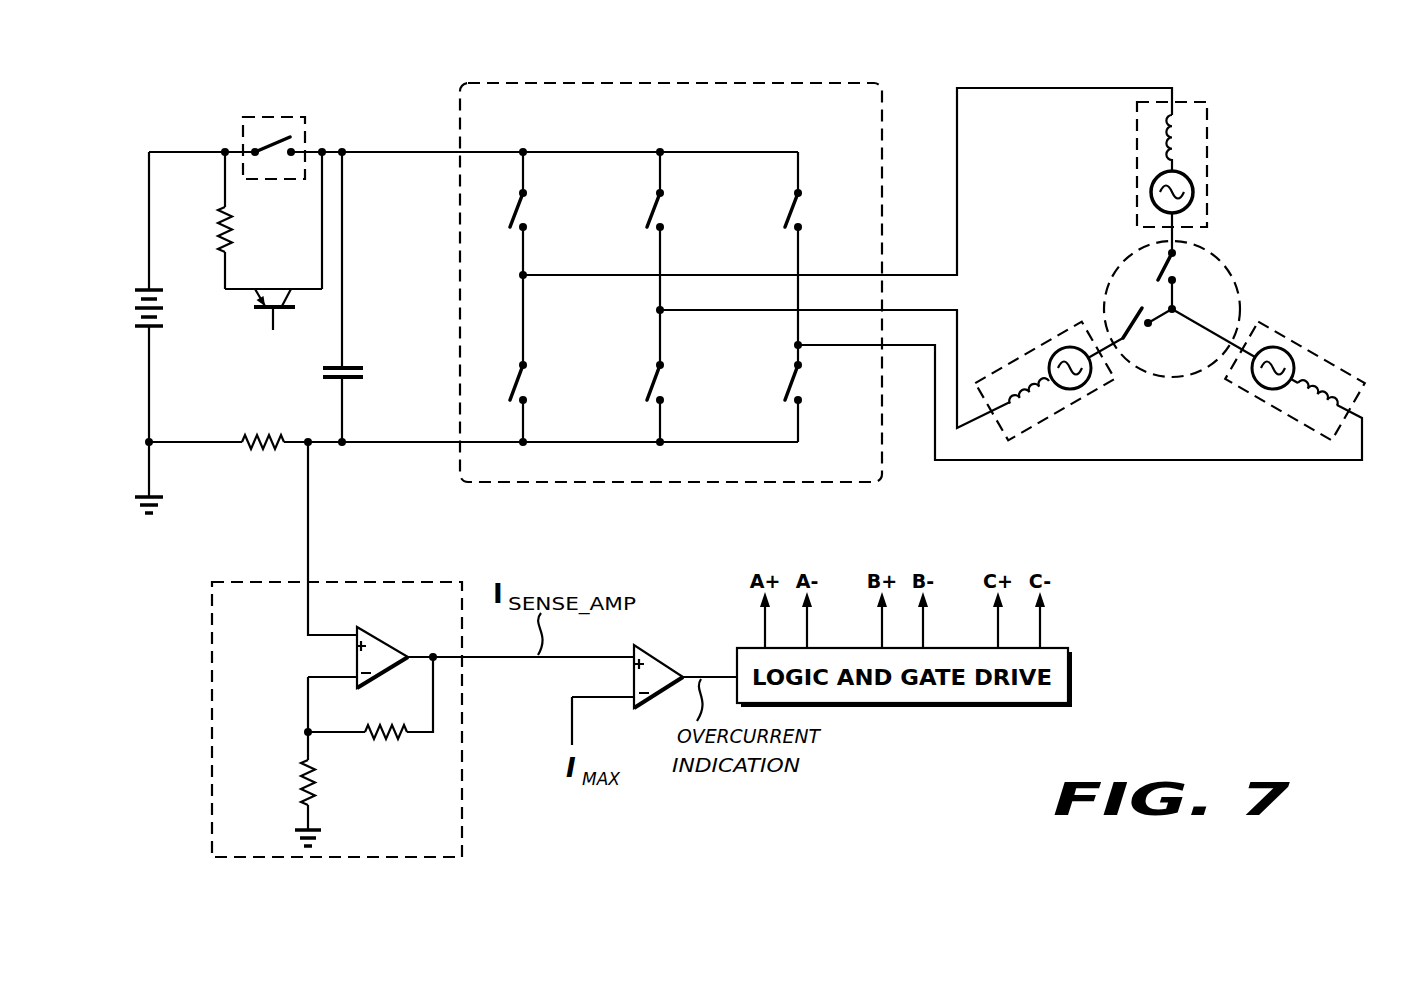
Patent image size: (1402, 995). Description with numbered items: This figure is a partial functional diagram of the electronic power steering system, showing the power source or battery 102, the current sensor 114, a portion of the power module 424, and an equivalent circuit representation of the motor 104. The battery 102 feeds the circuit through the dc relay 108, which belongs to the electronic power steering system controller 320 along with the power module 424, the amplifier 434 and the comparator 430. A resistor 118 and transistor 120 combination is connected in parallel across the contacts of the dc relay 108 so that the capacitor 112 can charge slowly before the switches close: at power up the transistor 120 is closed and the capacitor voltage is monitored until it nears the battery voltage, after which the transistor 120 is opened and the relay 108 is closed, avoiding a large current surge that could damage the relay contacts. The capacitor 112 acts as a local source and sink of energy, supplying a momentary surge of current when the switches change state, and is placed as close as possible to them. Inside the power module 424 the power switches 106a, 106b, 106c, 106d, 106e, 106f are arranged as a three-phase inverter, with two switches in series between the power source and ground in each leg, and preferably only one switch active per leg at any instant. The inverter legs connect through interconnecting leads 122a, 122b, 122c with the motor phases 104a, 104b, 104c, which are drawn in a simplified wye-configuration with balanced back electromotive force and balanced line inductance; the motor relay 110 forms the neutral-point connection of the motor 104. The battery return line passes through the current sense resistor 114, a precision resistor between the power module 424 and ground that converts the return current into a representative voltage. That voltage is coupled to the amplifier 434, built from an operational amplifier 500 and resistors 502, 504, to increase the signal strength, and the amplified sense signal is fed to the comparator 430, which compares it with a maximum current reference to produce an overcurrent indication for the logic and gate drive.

The power source 102 is at (135, 305).
The dc relay 108 is at (283, 181).
The resistor 118 is at (229, 237).
The transistor 120 is at (258, 319).
The electronic power steering system controller 320 is at (268, 79).
The capacitor 112 is at (322, 373).
The current sense resistor 114 is at (247, 437).
The power module 424 is at (681, 83).
The switch 106a is at (529, 214).
The switch 106b is at (666, 214).
The switch 106c is at (804, 214).
The switch 106d is at (529, 386).
The switch 106e is at (666, 386).
The switch 106f is at (804, 386).
The interconnecting lead 122a is at (1062, 89).
The interconnecting lead 122b is at (958, 323).
The interconnecting lead 122c is at (1205, 460).
The motor 104 is at (1131, 320).
The motor phase 104a is at (1207, 152).
The motor phase 104b is at (1075, 402).
The motor phase 104c is at (1322, 358).
The motor relay 110 is at (1232, 275).
The amplifier 434 is at (388, 719).
The operational amplifier 500 is at (389, 645).
The resistor 502 is at (301, 774).
The resistor 504 is at (390, 739).
The comparator 430 is at (662, 661).